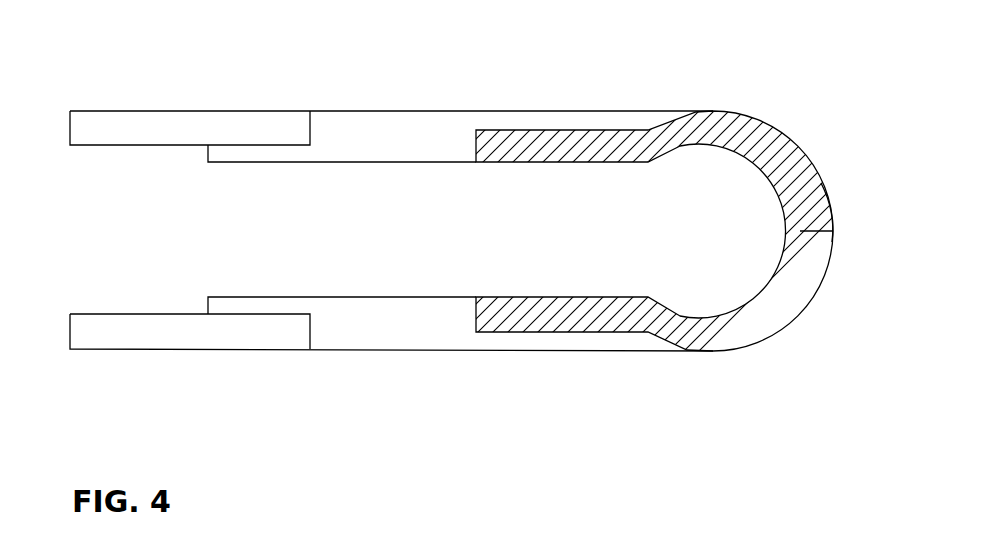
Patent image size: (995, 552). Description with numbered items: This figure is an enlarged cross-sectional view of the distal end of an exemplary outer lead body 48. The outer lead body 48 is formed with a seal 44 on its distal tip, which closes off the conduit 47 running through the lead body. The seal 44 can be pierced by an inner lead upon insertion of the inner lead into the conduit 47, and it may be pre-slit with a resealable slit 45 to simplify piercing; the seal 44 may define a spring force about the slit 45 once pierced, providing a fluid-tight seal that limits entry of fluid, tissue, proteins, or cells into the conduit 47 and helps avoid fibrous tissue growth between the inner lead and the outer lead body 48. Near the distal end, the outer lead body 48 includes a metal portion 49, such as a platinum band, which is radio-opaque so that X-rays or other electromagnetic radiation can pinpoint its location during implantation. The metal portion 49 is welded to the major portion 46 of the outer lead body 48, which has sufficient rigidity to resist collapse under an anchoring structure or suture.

The seal 44 is at (776, 117).
The resealable slit 45 is at (822, 191).
The major portion 46 is at (197, 343).
The conduit 47 is at (106, 259).
The outer lead body 48 is at (648, 72).
The metal portion 49 is at (397, 342).